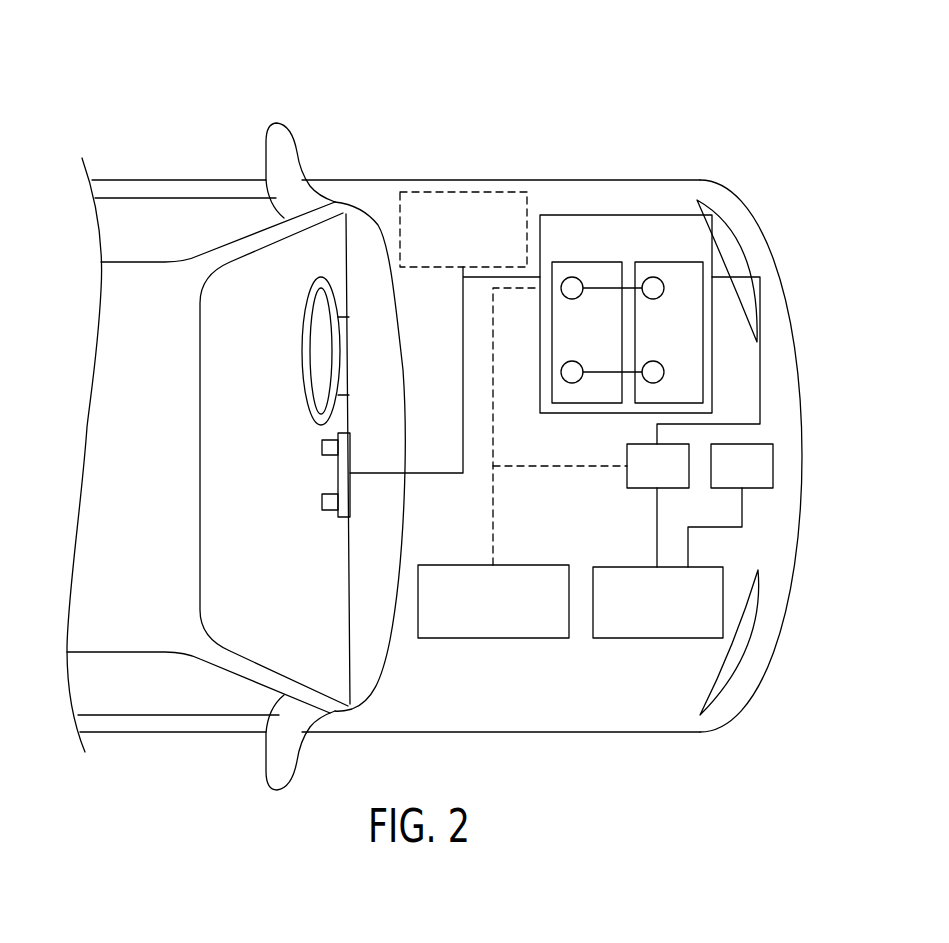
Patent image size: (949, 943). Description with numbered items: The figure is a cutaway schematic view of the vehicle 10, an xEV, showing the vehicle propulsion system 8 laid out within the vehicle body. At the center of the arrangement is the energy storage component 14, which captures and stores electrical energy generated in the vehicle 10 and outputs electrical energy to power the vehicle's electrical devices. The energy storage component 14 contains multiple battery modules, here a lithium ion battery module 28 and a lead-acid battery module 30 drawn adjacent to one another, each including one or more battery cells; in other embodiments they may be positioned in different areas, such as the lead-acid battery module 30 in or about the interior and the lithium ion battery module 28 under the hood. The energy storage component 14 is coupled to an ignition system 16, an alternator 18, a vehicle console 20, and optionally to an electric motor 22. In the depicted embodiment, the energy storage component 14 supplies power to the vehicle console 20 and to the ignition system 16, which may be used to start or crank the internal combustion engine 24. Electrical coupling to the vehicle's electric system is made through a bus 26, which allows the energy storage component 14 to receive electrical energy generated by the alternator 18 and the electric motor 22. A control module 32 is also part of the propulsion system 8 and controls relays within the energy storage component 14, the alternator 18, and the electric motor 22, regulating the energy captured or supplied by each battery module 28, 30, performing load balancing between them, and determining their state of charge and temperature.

The vehicle propulsion system 8 is at (716, 138).
The vehicle 10 is at (431, 116).
The energy storage component 14 is at (625, 274).
The ignition system 16 is at (774, 466).
The alternator 18 is at (627, 476).
The vehicle console 20 is at (308, 474).
The electric motor 22 is at (472, 189).
The internal combustion engine 24 is at (650, 640).
The bus 26 is at (462, 318).
The lithium ion battery module 28 is at (556, 358).
The lead-acid battery module 30 is at (695, 358).
The control module 32 is at (488, 640).